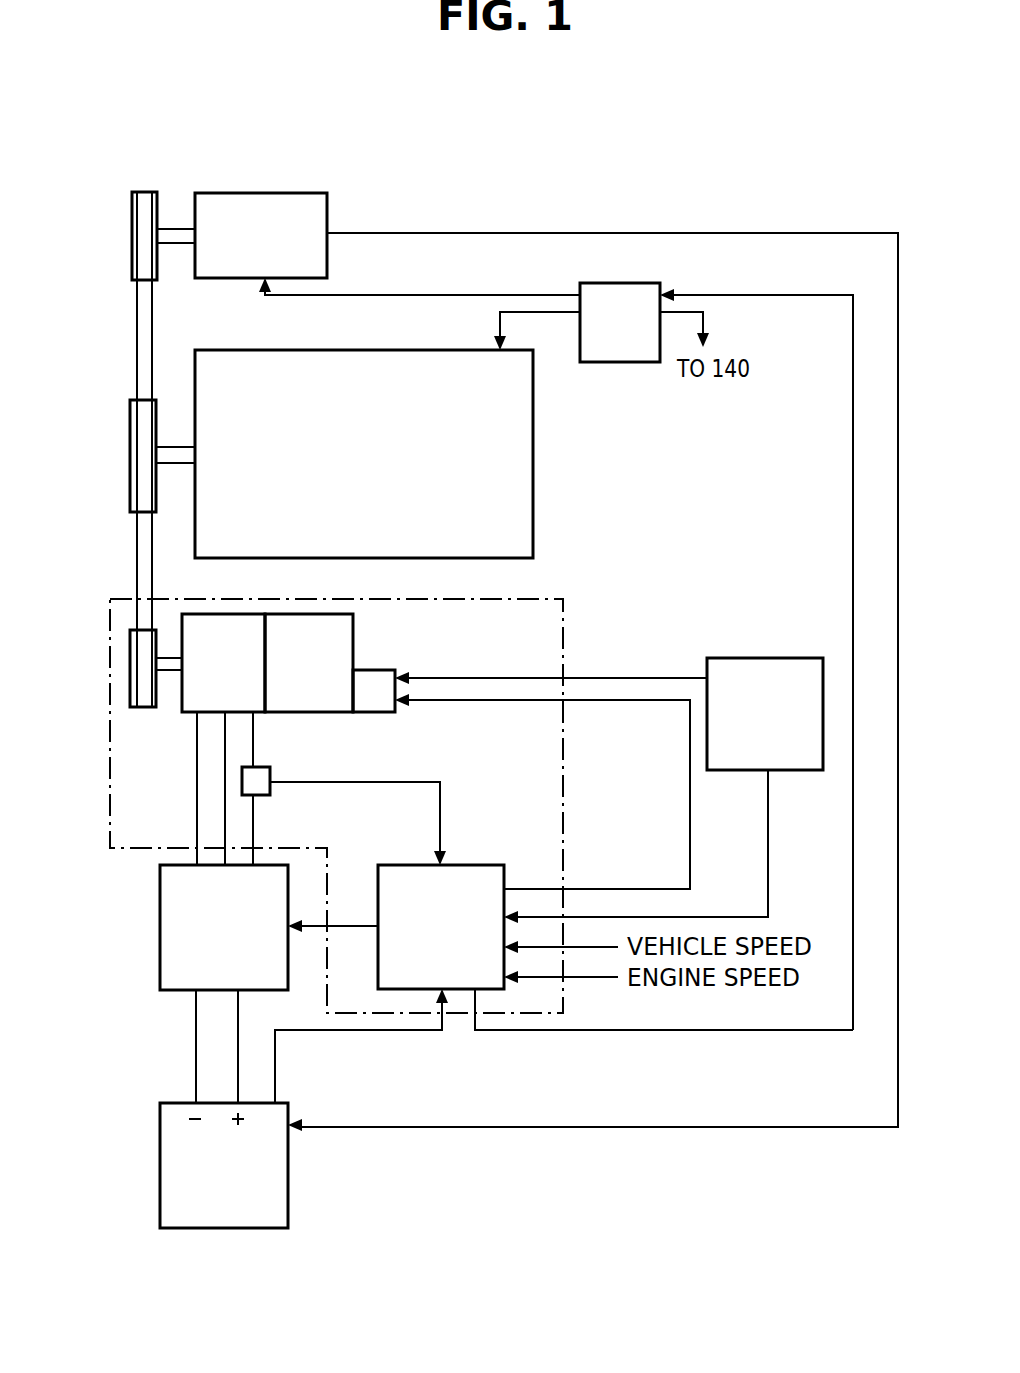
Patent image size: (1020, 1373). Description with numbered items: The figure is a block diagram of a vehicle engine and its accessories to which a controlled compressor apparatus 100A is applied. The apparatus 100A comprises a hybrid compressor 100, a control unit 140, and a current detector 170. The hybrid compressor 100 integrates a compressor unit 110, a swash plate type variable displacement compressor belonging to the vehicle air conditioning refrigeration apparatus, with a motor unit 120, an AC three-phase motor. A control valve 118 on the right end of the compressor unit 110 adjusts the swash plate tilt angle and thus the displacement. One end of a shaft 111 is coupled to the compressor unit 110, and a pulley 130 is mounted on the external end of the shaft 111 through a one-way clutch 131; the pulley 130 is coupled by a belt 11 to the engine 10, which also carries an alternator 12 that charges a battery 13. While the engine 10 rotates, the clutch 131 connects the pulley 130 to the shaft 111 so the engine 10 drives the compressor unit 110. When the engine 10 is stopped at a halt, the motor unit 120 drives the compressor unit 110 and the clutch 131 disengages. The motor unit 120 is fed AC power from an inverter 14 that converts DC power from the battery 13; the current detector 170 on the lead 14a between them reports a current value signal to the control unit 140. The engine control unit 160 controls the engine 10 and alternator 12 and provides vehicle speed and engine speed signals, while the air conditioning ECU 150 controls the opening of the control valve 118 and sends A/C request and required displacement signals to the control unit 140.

The engine 10 is at (510, 431).
The belt 11 is at (137, 555).
The alternator 12 is at (288, 205).
The battery 13 is at (160, 1150).
The inverter 14 is at (160, 912).
The lead 14a is at (253, 825).
The hybrid compressor 100 is at (304, 696).
The controlled compressor apparatus 100A is at (540, 594).
The compressor unit 110 is at (307, 700).
The shaft 111 is at (167, 662).
The control valve 118 is at (380, 675).
The motor unit 120 is at (247, 695).
The pulley 130 is at (130, 642).
The one-way clutch 131 is at (157, 673).
The control unit 140 is at (482, 873).
The air conditioning ECU 150 is at (757, 665).
The engine control unit 160 is at (637, 295).
The current detector 170 is at (257, 787).